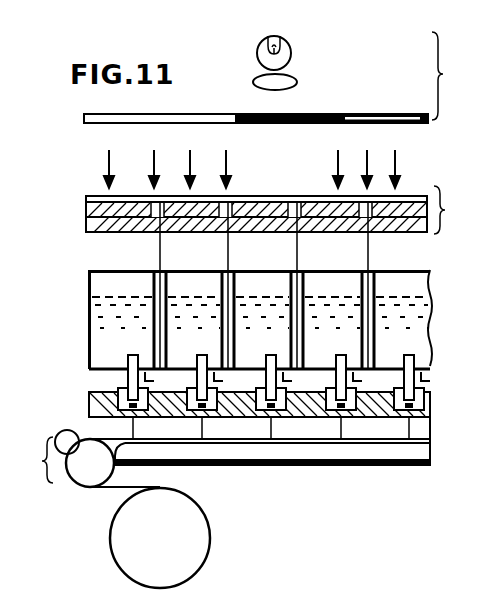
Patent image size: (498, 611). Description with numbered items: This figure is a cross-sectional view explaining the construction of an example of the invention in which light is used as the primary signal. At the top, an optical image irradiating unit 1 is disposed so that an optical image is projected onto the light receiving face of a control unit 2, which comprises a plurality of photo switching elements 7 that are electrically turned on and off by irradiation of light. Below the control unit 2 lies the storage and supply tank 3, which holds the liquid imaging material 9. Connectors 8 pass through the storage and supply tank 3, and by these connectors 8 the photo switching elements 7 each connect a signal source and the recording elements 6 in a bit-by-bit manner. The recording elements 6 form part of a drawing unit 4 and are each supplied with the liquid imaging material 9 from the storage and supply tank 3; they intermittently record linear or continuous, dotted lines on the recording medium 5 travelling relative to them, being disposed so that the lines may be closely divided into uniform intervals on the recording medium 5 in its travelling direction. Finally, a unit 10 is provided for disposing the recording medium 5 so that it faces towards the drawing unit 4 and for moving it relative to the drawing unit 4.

The optical image irradiating unit 1 is at (274, 77).
The control unit 2 is at (275, 210).
The storage and supply tank 3 is at (430, 271).
The drawing unit 4 is at (432, 398).
The recording medium 5 is at (420, 440).
The recording elements 6 is at (128, 357).
The photo switching elements 7 is at (155, 202).
The connector 8 is at (369, 249).
The liquid imaging material 9 is at (100, 296).
The unit for disposing and moving the recording medium 10 is at (117, 509).